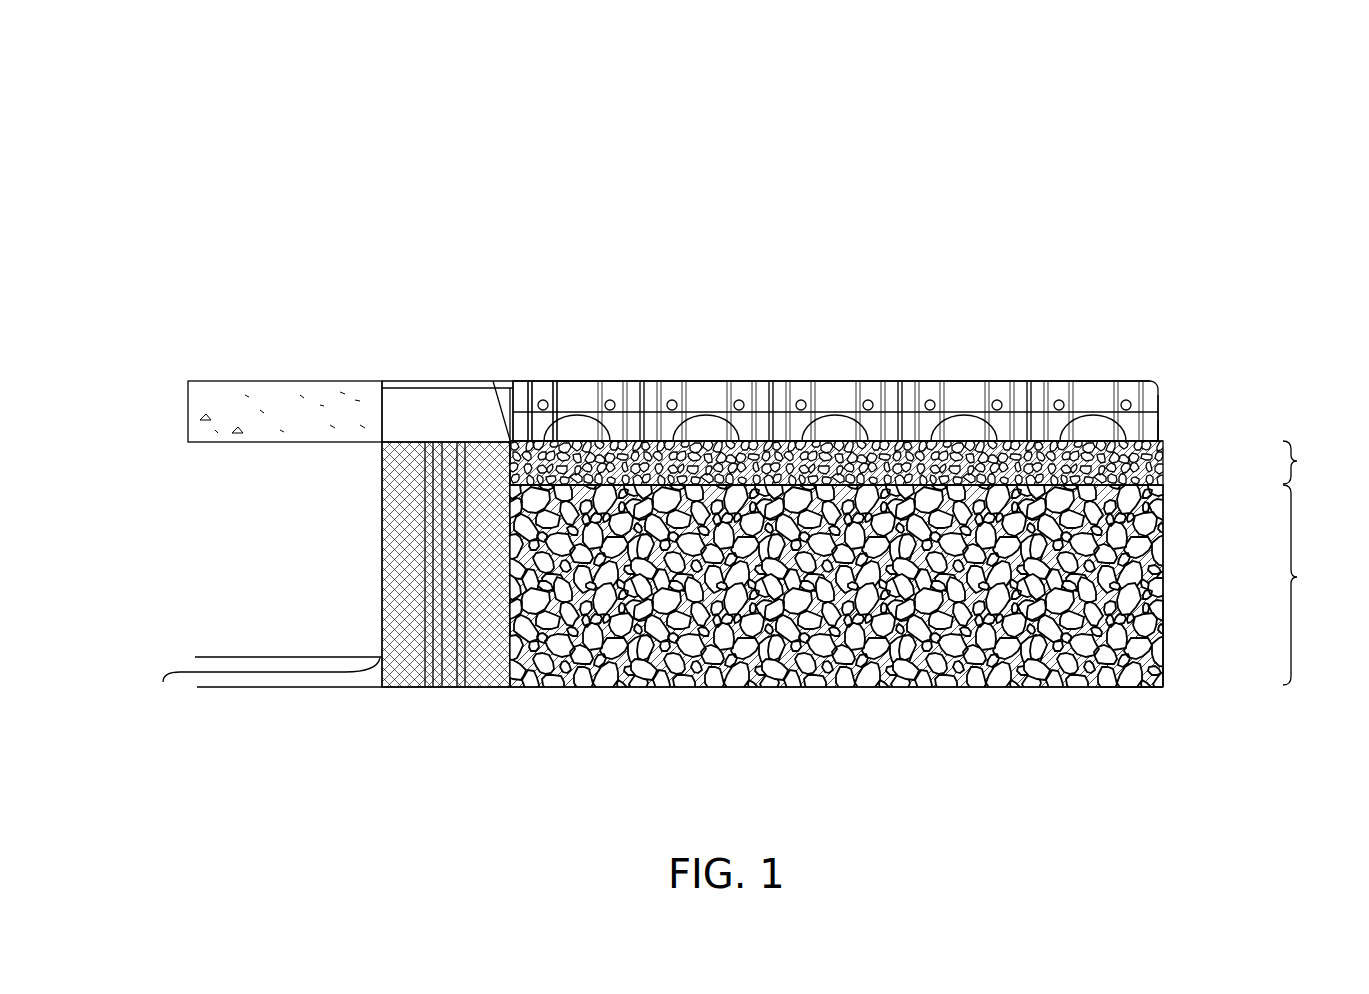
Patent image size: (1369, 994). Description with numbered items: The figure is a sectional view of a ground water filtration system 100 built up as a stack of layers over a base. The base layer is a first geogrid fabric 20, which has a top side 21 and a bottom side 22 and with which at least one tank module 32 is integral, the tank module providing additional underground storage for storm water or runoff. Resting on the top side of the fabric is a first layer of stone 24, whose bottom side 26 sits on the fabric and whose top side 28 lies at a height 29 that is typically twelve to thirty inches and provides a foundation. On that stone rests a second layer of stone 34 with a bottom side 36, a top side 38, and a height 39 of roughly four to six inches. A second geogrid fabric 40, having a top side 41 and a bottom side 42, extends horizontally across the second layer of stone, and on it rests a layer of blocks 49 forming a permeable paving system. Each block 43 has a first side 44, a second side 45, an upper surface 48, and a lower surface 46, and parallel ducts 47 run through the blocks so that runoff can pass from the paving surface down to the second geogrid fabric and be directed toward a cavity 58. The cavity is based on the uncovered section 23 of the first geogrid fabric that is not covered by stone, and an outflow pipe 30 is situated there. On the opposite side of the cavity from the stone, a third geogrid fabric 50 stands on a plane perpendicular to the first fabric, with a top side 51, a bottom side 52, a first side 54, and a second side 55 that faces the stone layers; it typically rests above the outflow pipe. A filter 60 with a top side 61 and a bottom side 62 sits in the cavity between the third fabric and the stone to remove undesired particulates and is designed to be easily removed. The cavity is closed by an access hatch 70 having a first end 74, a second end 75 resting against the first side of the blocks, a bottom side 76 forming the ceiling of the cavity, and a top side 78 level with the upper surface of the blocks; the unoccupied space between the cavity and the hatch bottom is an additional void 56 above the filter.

The ground water filtration system 100 is at (1118, 150).
The first geogrid fabric 20 is at (1165, 685).
The top side of first geogrid fabric 21 is at (1165, 680).
The bottom side of first geogrid fabric 22 is at (1152, 688).
The uncovered section of first geogrid fabric 23 is at (445, 688).
The first layer of stone 24 is at (1165, 571).
The bottom side of first layer of stone 26 is at (1165, 657).
The top side of first layer of stone 28 is at (1165, 502).
The height of first layer of stone 29 is at (1309, 585).
The outflow pipe 30 is at (277, 688).
The tank module 32 is at (478, 688).
The second layer of stone 34 is at (1163, 463).
The bottom side of second layer of stone 36 is at (1163, 481).
The top side of second layer of stone 38 is at (1163, 444).
The height of second layer of stone 39 is at (1309, 462).
The second geogrid fabric 40 is at (1160, 440).
The top side of second geogrid fabric 41 is at (1158, 438).
The bottom side of second geogrid fabric 42 is at (1163, 442).
The block 43 is at (722, 348).
The first side of block 44 is at (508, 381).
The second side of block 45 is at (1158, 405).
The lower surface of block 46 is at (493, 381).
The parallel ducts 47 is at (641, 381).
The upper surface of block 48 is at (555, 381).
The layer of blocks 49 is at (833, 312).
The third geogrid fabric 50 is at (377, 523).
The top side of third geogrid fabric 51 is at (382, 440).
The bottom side of third geogrid fabric 52 is at (259, 688).
The first side of third geogrid fabric 54 is at (382, 597).
The second side of third geogrid fabric 55 is at (382, 556).
The additional void 56 is at (393, 381).
The cavity 58 is at (505, 688).
The filter 60 is at (440, 440).
The top side of filter 61 is at (426, 440).
The bottom side of filter 62 is at (458, 688).
The access hatch 70 is at (440, 381).
The first end of access hatch 74 is at (382, 380).
The second end of access hatch 75 is at (523, 381).
The bottom side of access hatch 76 is at (510, 432).
The top side of access hatch 78 is at (453, 381).